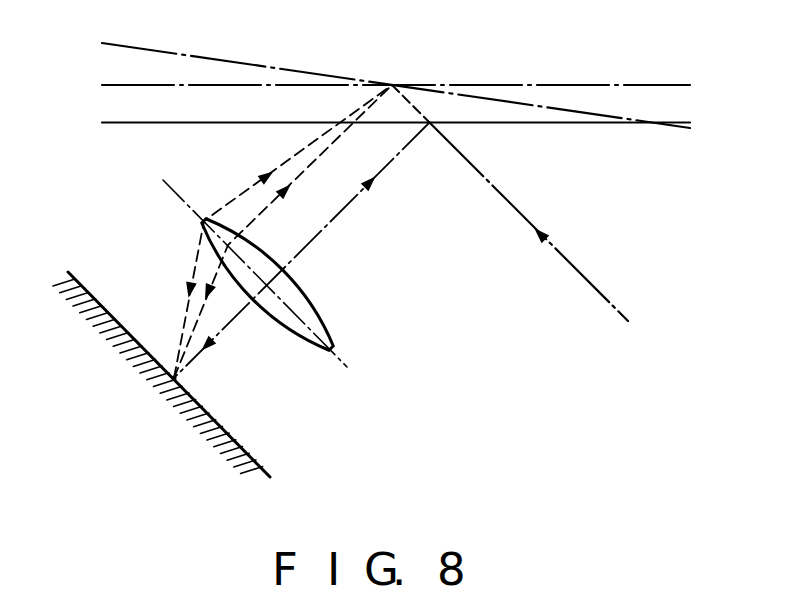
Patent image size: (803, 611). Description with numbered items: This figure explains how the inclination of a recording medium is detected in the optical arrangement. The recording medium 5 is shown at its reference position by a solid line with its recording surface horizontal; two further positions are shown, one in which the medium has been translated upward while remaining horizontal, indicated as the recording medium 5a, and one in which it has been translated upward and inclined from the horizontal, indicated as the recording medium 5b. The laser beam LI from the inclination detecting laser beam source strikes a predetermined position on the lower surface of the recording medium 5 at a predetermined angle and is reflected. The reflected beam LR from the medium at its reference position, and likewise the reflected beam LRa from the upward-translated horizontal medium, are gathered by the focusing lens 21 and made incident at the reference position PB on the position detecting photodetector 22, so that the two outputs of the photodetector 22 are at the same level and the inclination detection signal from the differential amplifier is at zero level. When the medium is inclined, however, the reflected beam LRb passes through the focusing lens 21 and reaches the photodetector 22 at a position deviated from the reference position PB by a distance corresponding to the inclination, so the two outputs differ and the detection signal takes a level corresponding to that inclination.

The recording medium (translated upward and inclined) 5b is at (376, 75).
The recording medium (translated upward, horizontal) 5a is at (376, 85).
The recording medium 5 is at (384, 122).
The laser beam LI is at (513, 205).
The reflected beam LR is at (386, 167).
The reflected beam (from upward-translated horizontal medium) LRa is at (308, 166).
The reflected beam (from inclined medium) LRb is at (317, 141).
The focusing lens 21 is at (328, 325).
The reference position PB is at (176, 377).
The position detecting photodetector 22 is at (258, 465).